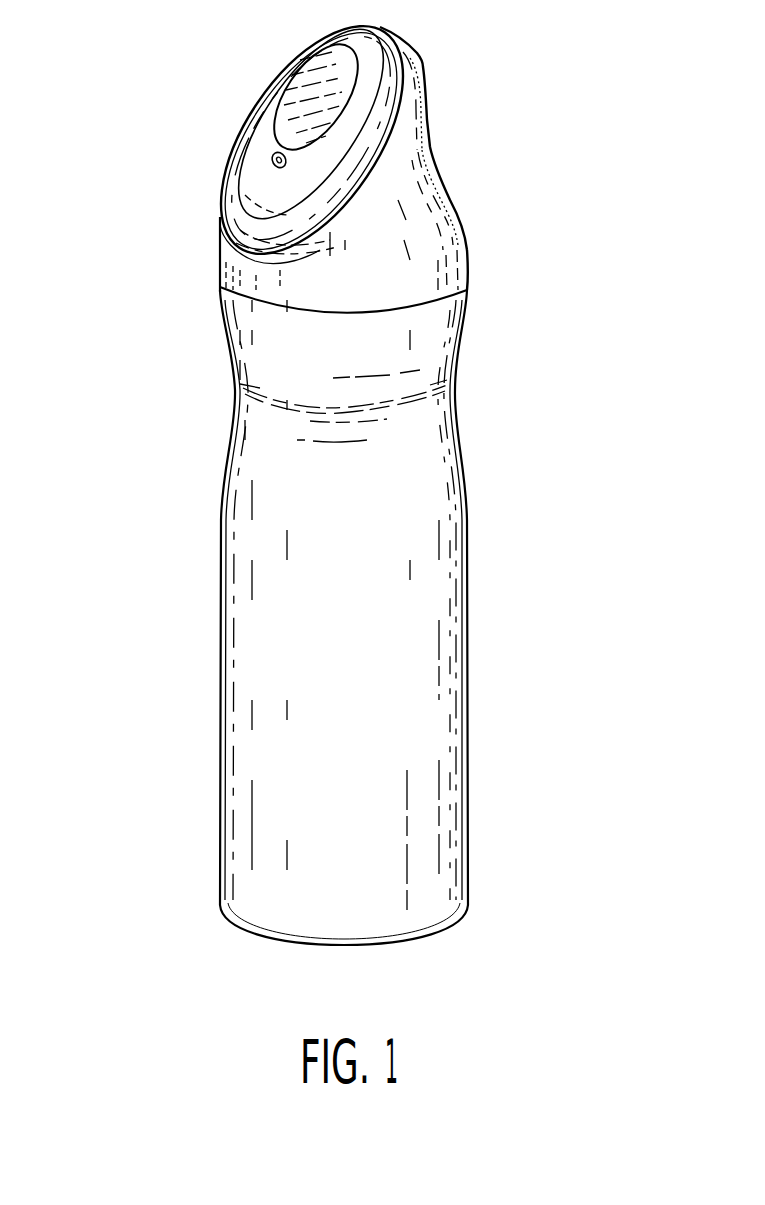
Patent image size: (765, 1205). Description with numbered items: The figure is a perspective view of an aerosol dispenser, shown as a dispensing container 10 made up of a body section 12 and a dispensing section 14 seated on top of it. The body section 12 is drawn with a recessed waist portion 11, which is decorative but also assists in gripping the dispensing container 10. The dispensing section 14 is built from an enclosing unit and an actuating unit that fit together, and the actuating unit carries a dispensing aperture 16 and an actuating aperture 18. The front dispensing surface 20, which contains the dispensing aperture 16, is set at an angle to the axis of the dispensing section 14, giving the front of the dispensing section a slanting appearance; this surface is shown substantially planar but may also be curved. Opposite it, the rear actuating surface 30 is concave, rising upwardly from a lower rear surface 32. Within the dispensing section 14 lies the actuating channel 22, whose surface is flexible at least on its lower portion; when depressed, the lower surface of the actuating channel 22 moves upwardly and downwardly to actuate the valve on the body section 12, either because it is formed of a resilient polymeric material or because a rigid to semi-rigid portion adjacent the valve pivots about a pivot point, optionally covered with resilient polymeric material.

The dispensing container 10 is at (467, 466).
The recessed waist portion 11 is at (457, 373).
The body section 12 is at (455, 547).
The dispensing section 14 is at (218, 268).
The dispensing aperture 16 is at (272, 162).
The actuating aperture 18 is at (294, 67).
The dispensing surface 20 is at (262, 146).
The actuating channel 22 is at (295, 97).
The rear actuating surface 30 is at (413, 122).
The lower rear surface 32 is at (462, 233).